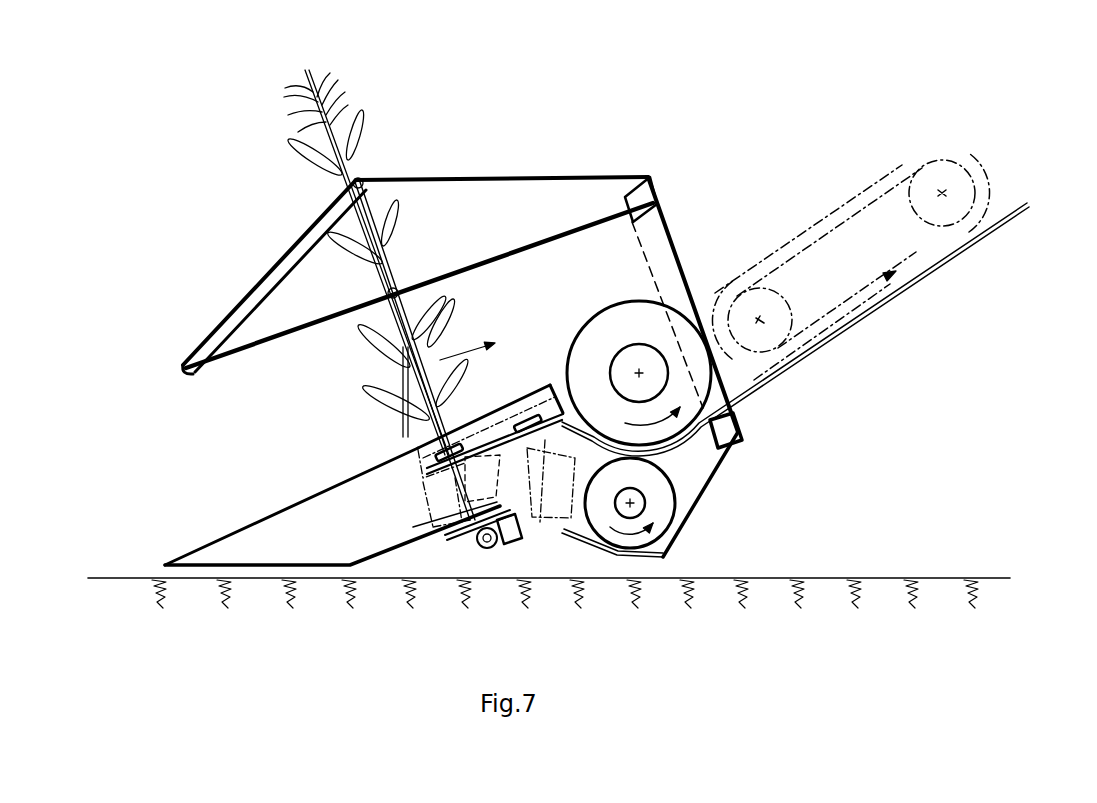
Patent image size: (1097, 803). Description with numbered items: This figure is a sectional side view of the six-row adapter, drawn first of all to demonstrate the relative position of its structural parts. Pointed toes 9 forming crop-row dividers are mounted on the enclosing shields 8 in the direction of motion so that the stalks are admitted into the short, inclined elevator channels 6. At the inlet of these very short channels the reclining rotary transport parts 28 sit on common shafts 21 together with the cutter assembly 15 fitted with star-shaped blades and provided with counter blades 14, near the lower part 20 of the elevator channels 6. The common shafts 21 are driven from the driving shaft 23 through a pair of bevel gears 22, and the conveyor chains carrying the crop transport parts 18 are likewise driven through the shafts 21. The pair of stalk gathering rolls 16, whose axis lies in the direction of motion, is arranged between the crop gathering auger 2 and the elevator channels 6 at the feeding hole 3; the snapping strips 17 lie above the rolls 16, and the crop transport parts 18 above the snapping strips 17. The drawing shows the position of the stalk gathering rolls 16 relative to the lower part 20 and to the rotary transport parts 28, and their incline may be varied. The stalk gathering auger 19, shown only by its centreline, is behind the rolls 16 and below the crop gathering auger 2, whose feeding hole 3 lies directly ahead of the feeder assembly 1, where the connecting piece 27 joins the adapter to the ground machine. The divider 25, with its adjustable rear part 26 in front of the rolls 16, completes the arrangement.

The feeder assembly 1 is at (837, 317).
The crop gathering auger 2 is at (690, 440).
The feeding hole 3 is at (732, 393).
The elevator channels 6 is at (440, 507).
The enclosing shields 8 is at (408, 387).
The pointed toes 9 is at (248, 537).
The counter blades 14 is at (457, 520).
The cutter assembly 15 is at (445, 536).
The pair of stalk gathering rolls 16 is at (572, 460).
The snapping strips 17 is at (505, 425).
The crop transport parts 18 is at (420, 452).
The stalk gathering auger 19 is at (657, 527).
The lower part of the elevator channels 20 is at (496, 480).
The common shafts 21 is at (470, 453).
The pair of bevel gears 22 is at (474, 532).
The driving shaft 23 is at (508, 544).
The divider 25 is at (258, 340).
The rear part of the divider 26 is at (366, 184).
The connecting piece 27 is at (664, 238).
The rotary transport parts 28 is at (423, 487).